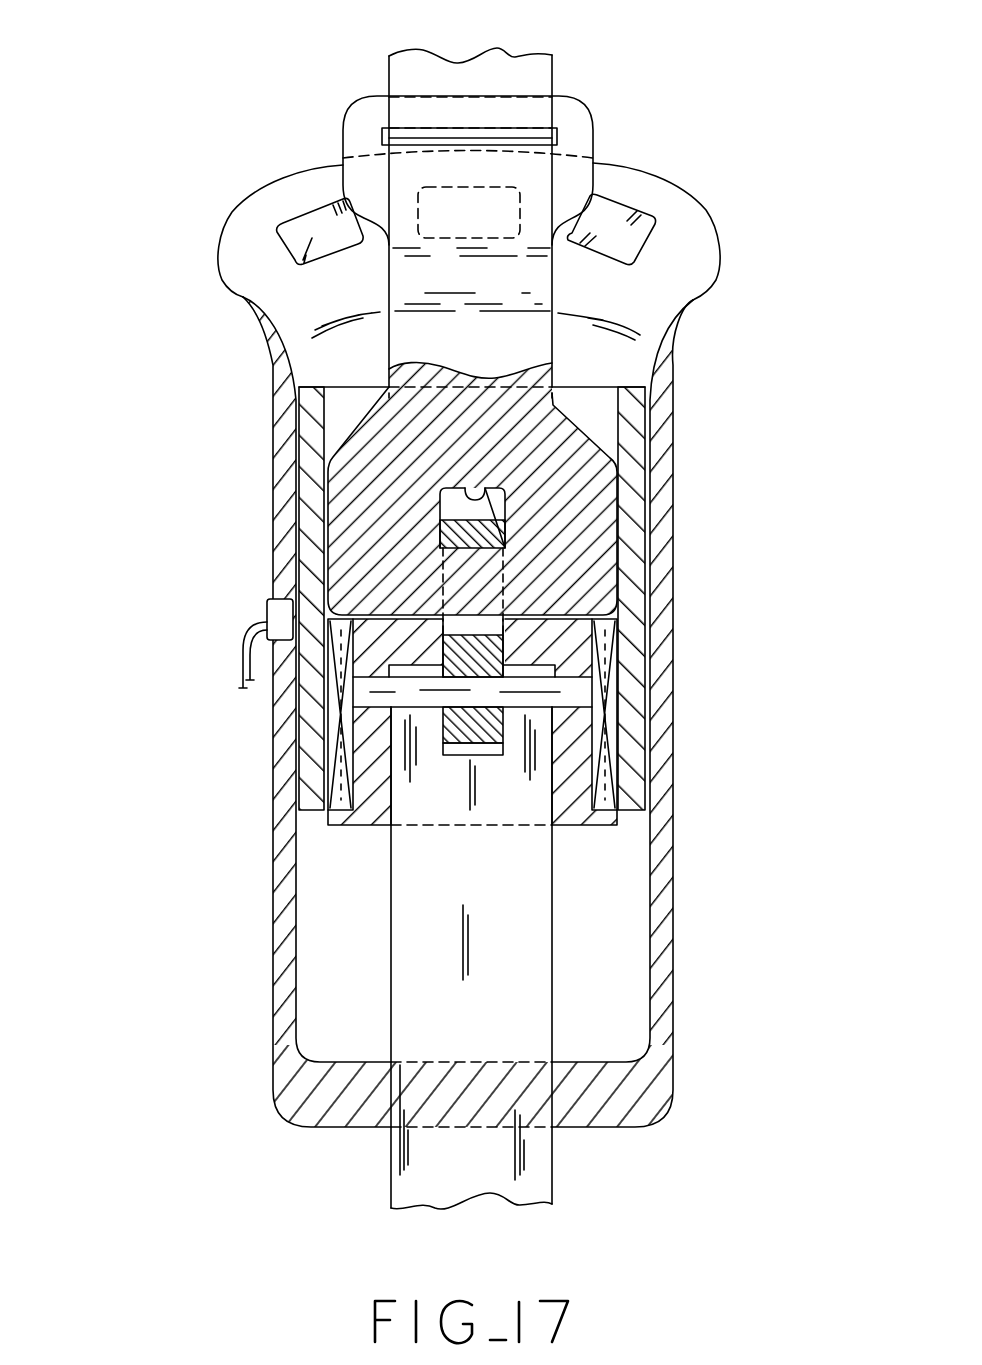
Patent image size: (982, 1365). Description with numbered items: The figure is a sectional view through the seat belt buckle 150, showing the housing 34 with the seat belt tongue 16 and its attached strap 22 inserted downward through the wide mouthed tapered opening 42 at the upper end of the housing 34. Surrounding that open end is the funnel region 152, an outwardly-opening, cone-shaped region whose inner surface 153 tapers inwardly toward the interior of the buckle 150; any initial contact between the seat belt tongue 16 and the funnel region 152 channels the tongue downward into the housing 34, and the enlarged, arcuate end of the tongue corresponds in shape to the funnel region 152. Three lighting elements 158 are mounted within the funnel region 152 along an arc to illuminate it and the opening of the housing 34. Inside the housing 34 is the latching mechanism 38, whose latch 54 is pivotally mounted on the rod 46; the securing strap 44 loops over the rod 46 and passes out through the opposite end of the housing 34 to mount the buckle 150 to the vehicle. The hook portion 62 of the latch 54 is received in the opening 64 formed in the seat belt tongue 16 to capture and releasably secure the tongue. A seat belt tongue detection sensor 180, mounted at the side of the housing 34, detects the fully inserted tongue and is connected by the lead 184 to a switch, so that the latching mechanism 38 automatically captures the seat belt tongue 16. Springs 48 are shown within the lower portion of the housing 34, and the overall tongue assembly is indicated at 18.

The seat belt tongue 16 is at (478, 421).
The tongue assembly 18 is at (390, 47).
The strap 22 is at (520, 52).
The housing 34 is at (672, 436).
The latching mechanism 38 is at (679, 524).
The wide mouthed tapered opening 42 is at (587, 358).
The securing strap 44 is at (494, 902).
The rod 46 is at (575, 692).
The springs 48 is at (605, 738).
The latch 54 is at (516, 600).
The hook portion 62 is at (467, 518).
The opening 64 is at (473, 488).
The seat belt buckle 150 is at (188, 187).
The funnel region 152 is at (697, 177).
The inner surface 153 is at (686, 244).
The lighting elements 158 is at (503, 205).
The seat belt tongue detection sensor 180 is at (268, 602).
The lead 184 is at (240, 660).